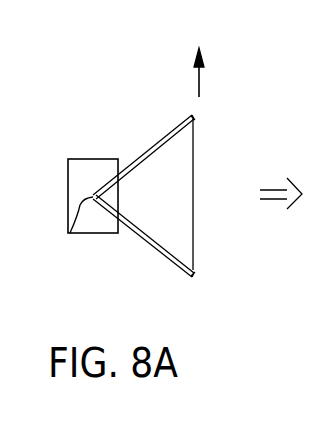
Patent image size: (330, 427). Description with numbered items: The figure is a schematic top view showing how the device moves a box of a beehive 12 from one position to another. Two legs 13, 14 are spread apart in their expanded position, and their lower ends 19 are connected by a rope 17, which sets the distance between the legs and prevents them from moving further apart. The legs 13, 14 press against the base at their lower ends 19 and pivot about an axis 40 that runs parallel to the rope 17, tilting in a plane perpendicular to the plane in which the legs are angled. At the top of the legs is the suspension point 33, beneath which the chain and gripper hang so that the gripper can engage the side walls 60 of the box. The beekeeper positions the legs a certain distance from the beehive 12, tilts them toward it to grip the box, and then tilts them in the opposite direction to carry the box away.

The beehive 12 is at (56, 201).
The leg 13 is at (150, 250).
The leg 14 is at (162, 140).
The rope 17 is at (193, 189).
The lower end 19 is at (197, 117).
The suspension point 33 is at (70, 233).
The axis 40 is at (201, 85).
The side wall 60 is at (83, 158).